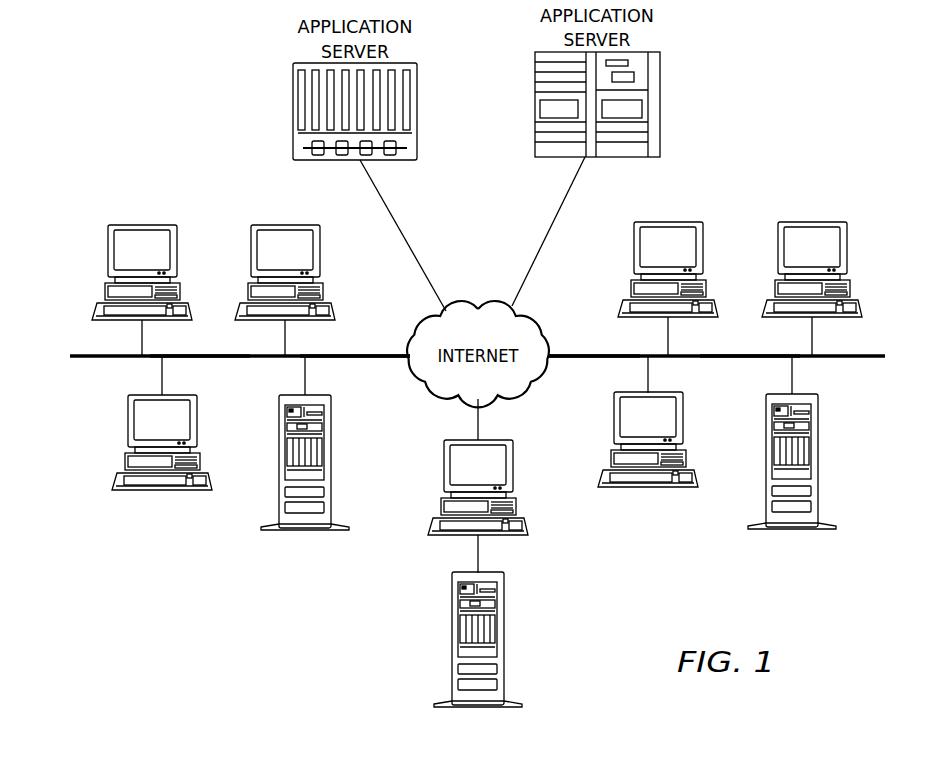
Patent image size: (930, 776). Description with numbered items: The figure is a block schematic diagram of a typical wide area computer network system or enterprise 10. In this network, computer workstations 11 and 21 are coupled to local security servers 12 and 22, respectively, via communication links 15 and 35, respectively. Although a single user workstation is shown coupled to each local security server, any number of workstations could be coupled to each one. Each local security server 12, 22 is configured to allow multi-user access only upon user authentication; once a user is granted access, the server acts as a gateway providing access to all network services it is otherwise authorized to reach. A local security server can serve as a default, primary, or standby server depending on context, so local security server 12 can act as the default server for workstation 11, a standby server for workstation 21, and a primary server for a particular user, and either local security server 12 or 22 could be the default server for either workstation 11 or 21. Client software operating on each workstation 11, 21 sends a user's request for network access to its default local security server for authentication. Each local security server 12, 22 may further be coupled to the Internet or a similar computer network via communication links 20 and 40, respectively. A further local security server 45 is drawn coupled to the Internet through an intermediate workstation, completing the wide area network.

The computer network system 10 is at (185, 131).
The computer workstation 11 is at (108, 253).
The local security server 12 is at (332, 462).
The communication link 15 is at (216, 355).
The communication link 20 is at (370, 355).
The computer workstation 21 is at (703, 252).
The local security server 22 is at (818, 460).
The communication link 35 is at (737, 355).
The communication link 40 is at (584, 355).
The local security server 45 is at (504, 640).